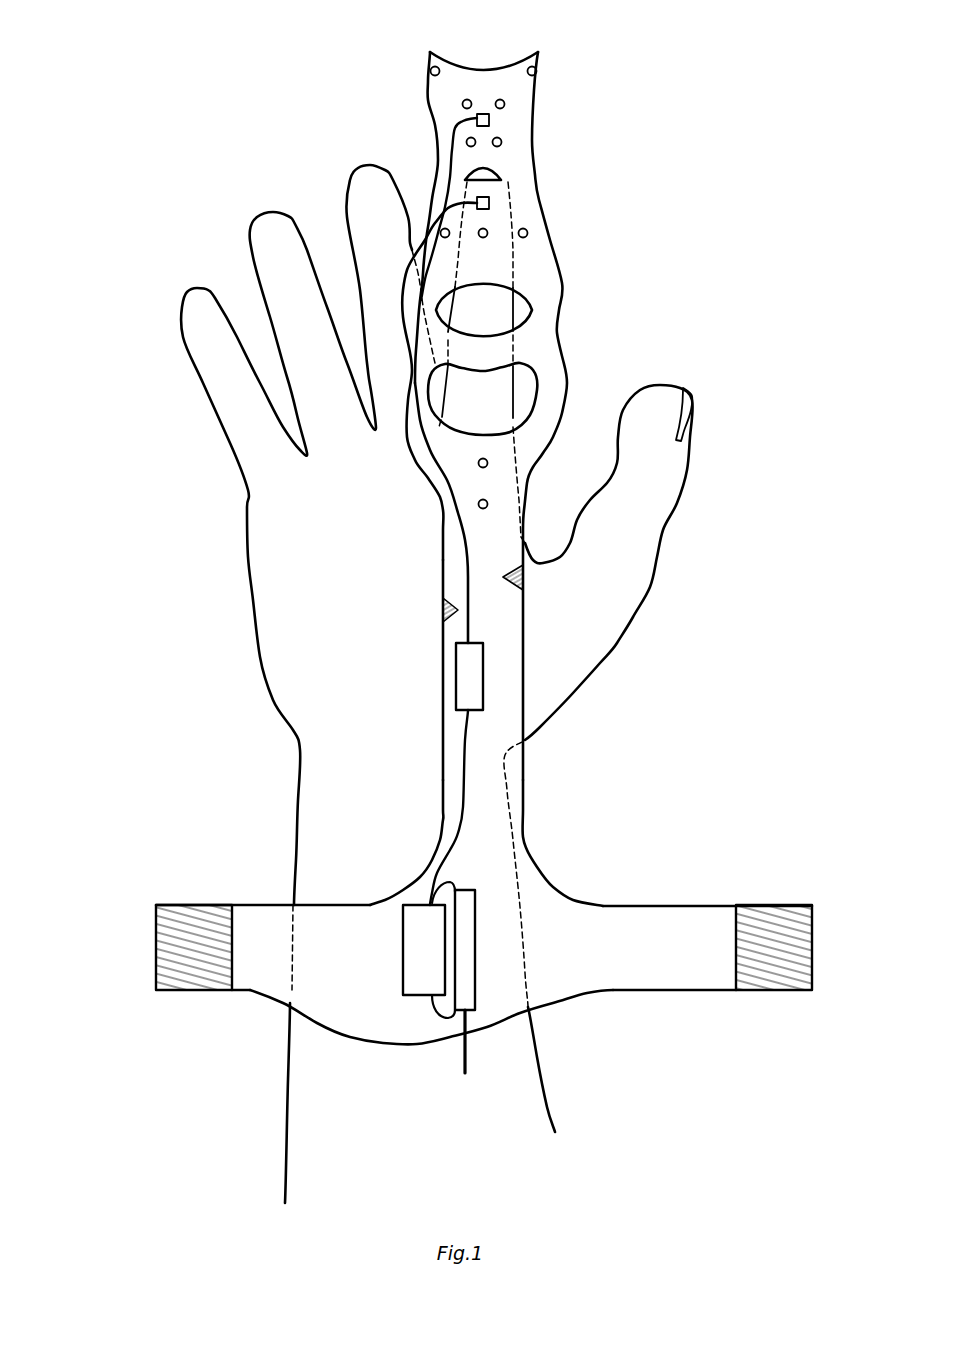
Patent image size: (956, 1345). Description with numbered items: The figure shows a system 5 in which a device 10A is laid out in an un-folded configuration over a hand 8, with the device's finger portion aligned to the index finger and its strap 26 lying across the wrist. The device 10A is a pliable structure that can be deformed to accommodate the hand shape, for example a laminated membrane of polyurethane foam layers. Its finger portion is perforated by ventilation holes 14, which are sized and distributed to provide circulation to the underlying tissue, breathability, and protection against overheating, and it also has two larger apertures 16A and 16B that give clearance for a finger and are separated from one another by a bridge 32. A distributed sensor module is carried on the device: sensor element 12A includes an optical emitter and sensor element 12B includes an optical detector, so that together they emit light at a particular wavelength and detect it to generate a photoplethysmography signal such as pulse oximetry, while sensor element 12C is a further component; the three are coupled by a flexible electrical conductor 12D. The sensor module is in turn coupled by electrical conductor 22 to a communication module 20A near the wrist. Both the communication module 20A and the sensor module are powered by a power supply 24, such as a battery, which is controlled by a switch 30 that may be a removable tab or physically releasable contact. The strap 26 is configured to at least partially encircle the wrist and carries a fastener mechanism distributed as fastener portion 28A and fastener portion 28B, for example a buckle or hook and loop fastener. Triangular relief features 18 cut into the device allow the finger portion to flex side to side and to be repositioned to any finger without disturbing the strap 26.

The system 5 is at (123, 485).
The hand 8 is at (252, 598).
The device 10A is at (532, 135).
The sensor element 12A is at (477, 117).
The sensor element 12B is at (490, 200).
The sensor element 12C is at (483, 673).
The electrical conductor 12D is at (467, 580).
The ventilation holes 14 is at (439, 68).
The aperture 16A is at (532, 305).
The aperture 16B is at (535, 365).
The relief features 18 is at (443, 610).
The communication module 20A is at (403, 950).
The electrical conductor 22 is at (462, 807).
The power supply 24 is at (476, 950).
The strap 26 is at (675, 905).
The fastener portion 28A is at (812, 948).
The fastener portion 28B is at (177, 905).
The switch 30 is at (467, 1062).
The bridge 32 is at (495, 352).